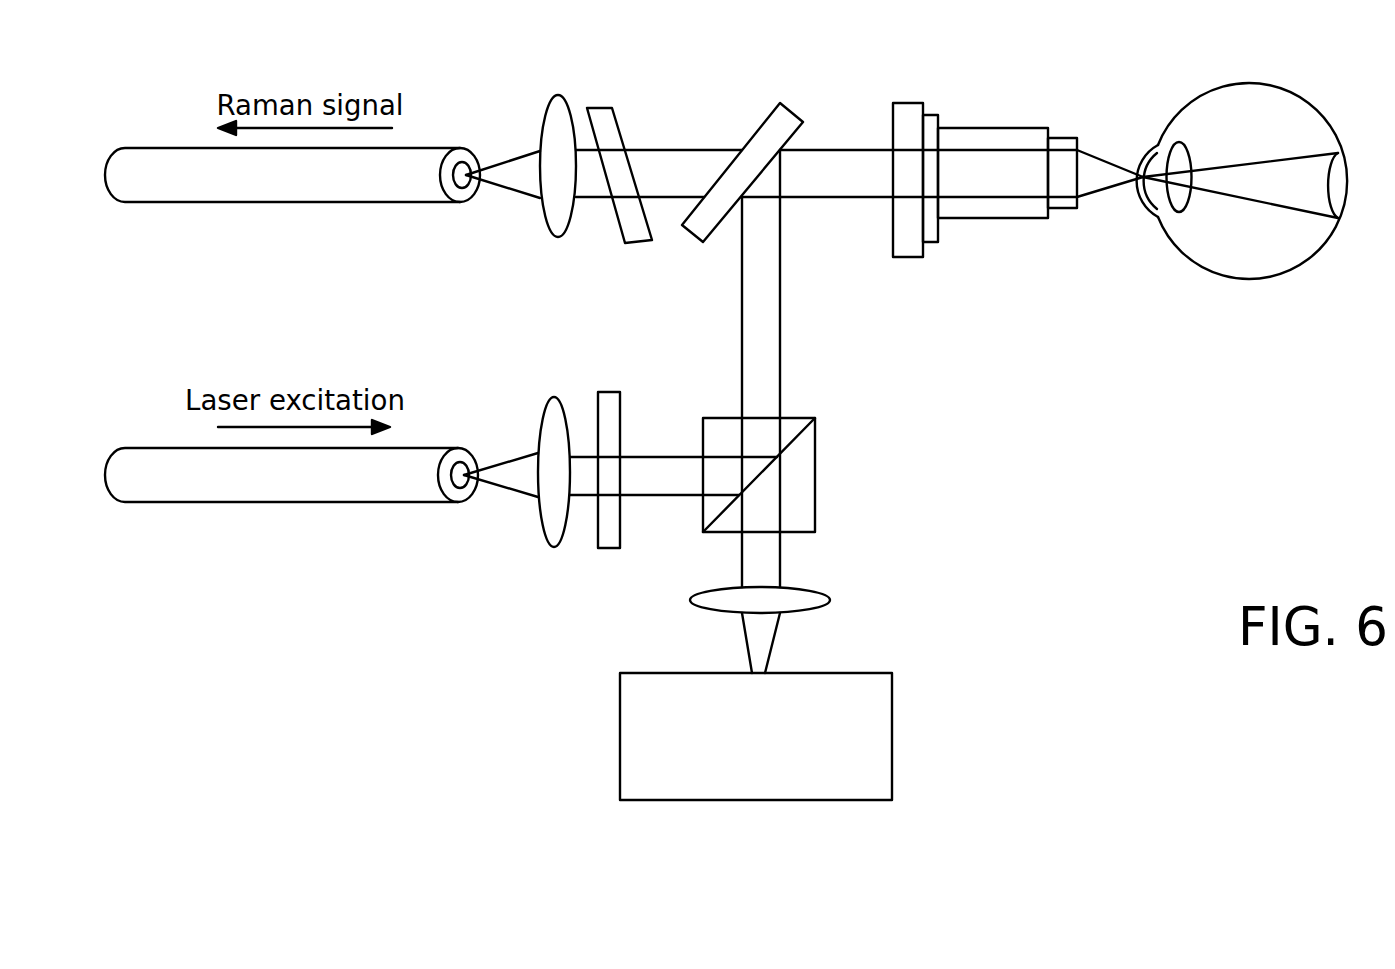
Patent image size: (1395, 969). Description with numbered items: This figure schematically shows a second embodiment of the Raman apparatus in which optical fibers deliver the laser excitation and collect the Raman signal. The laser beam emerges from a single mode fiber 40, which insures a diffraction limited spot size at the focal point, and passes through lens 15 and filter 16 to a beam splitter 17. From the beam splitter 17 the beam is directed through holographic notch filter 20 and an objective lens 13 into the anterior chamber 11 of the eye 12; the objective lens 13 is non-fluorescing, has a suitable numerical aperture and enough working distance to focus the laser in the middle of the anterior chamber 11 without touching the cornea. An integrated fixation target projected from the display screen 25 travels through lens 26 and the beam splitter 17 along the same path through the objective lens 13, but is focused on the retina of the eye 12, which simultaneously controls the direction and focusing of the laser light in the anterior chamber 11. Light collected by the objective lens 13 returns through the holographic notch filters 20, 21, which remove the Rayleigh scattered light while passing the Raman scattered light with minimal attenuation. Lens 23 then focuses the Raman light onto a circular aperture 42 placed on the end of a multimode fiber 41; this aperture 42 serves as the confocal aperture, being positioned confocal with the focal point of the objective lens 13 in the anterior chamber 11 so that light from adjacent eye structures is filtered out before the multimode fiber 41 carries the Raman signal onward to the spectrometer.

The anterior chamber 11 is at (1175, 198).
The eye 12 is at (1258, 97).
The objective lens 13 is at (1007, 130).
The lens 15 is at (543, 408).
The filter 16 is at (620, 390).
The beam splitter 17 is at (815, 418).
The holographic notch filter 20 is at (790, 107).
The holographic notch filter 21 is at (617, 128).
The lens 23 is at (563, 95).
The display screen 25 is at (893, 747).
The lens 26 is at (813, 590).
The single mode fiber 40 is at (237, 502).
The multimode fiber 41 is at (182, 202).
The circular aperture 42 is at (457, 202).